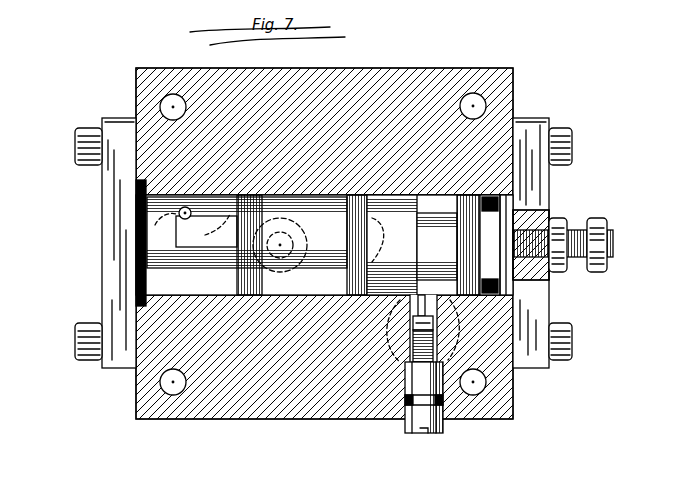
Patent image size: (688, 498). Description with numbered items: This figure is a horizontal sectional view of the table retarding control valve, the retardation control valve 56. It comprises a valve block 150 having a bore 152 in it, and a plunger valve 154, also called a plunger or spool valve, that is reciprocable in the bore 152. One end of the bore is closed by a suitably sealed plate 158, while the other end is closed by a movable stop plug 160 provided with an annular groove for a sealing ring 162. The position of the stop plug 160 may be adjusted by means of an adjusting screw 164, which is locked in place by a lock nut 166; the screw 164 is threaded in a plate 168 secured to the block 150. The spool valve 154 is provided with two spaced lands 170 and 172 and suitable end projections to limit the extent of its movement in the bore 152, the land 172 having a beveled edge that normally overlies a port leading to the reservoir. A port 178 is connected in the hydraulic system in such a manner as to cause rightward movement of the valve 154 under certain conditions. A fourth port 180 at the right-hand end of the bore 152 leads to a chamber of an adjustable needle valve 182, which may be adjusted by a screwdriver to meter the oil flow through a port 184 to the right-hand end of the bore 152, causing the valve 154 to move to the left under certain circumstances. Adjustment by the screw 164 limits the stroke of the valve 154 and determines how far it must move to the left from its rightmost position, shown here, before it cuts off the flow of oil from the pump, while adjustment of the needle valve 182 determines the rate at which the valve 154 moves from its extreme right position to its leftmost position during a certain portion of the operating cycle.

The retardation control valve 56 is at (449, 60).
The valve block 150 is at (315, 405).
The bore 152 is at (285, 205).
The plunger valve 154 is at (382, 209).
The plate 158 is at (112, 248).
The stop plug 160 is at (540, 290).
The sealing ring 162 is at (487, 200).
The adjusting screw 164 is at (575, 272).
The lock nut 166 is at (560, 220).
The plate 168 is at (546, 172).
The land 170 is at (252, 290).
The land 172 is at (406, 238).
The port 178 is at (133, 216).
The fourth port 180 is at (432, 320).
The needle valve 182 is at (455, 462).
The port 184 is at (420, 300).